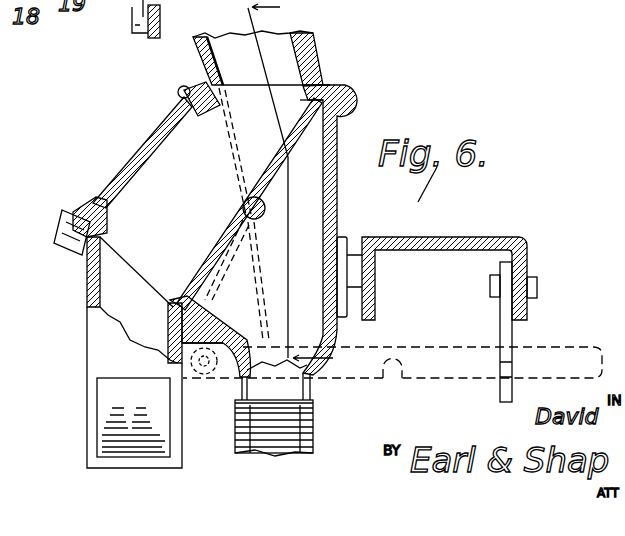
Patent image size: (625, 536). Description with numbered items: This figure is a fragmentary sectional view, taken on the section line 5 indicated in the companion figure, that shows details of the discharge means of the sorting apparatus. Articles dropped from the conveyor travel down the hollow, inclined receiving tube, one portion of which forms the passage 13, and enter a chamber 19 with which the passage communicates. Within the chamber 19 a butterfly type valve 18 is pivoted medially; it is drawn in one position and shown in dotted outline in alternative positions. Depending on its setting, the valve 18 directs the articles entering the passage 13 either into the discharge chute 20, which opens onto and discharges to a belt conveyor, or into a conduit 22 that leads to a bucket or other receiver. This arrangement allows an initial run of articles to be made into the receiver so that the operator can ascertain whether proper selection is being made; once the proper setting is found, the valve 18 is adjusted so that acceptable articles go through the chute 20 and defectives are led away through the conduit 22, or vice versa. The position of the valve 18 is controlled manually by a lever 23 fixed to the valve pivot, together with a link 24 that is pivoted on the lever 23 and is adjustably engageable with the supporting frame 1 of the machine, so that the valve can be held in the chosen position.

The supporting frame 1 is at (518, 237).
The section line 5- 5 is at (299, 185).
The passage 13 is at (303, 41).
The butterfly type valve 18 is at (273, 167).
The chamber 19 is at (155, 160).
The discharge chute 20 is at (108, 390).
The conduit 22 is at (300, 397).
The lever 23 is at (239, 284).
The link 24 is at (160, 14).